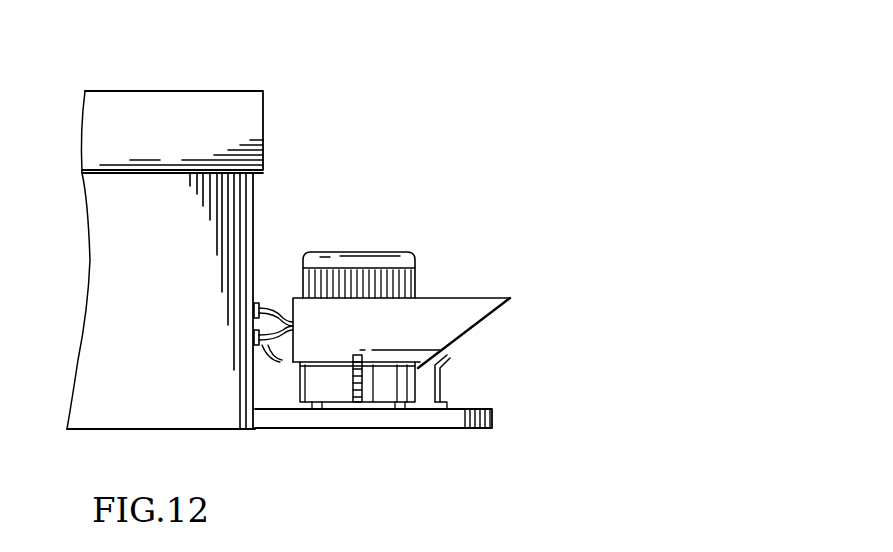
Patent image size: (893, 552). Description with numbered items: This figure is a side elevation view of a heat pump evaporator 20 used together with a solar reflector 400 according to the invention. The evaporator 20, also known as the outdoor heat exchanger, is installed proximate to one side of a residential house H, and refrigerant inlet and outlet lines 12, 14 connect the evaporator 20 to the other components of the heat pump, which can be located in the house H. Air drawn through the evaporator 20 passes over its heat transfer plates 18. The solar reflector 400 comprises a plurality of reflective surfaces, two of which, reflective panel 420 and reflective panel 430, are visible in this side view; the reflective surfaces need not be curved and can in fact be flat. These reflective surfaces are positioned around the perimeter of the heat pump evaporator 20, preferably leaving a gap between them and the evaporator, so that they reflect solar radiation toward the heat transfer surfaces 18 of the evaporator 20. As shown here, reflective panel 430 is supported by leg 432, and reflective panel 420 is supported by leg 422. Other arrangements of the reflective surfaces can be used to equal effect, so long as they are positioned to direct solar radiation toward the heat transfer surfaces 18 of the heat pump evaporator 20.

The house H is at (148, 91).
The refrigerant inlet line 12 is at (270, 318).
The refrigerant outlet line 14 is at (277, 345).
The heat transfer plates 18 is at (415, 283).
The heat pump evaporator 20 is at (344, 249).
The solar reflector 400 is at (463, 298).
The reflective panel 420 is at (480, 322).
The leg 422 is at (438, 383).
The reflective panel 430 is at (352, 343).
The leg 432 is at (350, 382).